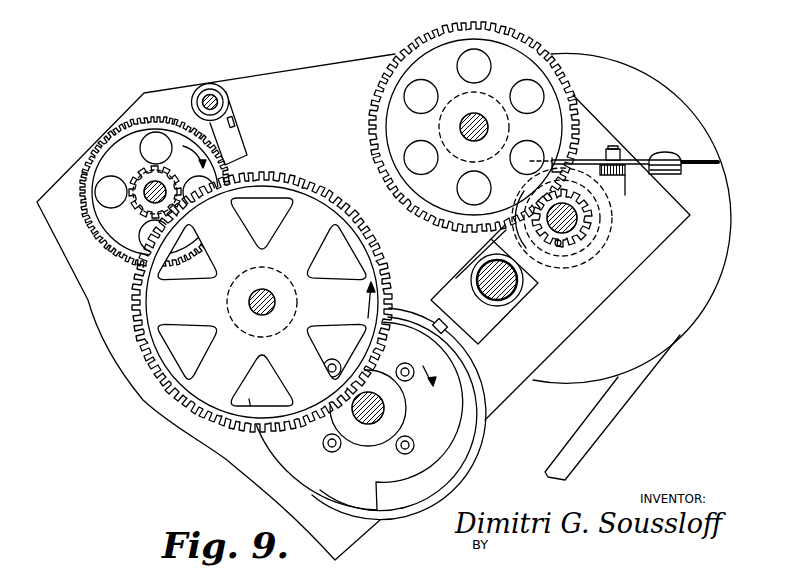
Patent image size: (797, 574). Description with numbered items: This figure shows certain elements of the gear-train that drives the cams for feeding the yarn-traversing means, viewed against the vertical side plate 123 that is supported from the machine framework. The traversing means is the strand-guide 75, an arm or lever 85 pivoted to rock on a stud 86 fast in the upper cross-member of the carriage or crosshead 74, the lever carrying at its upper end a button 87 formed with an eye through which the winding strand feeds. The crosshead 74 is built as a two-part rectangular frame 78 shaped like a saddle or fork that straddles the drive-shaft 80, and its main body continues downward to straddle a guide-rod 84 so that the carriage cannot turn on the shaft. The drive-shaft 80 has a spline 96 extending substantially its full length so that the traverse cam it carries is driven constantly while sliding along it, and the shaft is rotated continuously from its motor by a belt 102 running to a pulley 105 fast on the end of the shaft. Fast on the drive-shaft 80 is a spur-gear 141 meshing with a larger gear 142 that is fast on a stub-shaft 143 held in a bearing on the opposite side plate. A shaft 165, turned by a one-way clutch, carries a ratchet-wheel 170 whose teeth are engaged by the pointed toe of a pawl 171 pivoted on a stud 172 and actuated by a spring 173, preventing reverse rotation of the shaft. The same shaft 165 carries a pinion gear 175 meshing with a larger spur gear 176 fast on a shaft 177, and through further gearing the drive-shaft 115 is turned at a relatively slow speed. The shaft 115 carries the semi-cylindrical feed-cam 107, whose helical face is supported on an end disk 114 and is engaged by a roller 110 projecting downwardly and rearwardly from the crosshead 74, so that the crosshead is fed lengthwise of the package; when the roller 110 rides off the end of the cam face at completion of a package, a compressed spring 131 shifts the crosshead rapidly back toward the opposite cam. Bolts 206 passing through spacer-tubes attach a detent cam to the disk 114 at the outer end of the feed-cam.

The carriage or crosshead 74 is at (625, 195).
The strand-guide 75 is at (683, 156).
The two-part rectangular frame 78 is at (594, 236).
The drive-shaft 80 is at (568, 223).
The guide-rod 84 is at (510, 293).
The arm or lever 85 is at (592, 160).
The stud 86 is at (618, 150).
The button 87 is at (668, 151).
The spline 96 is at (578, 219).
The belt 102 is at (604, 412).
The pulley 105 is at (710, 222).
The semi-cylindrical cam 107 is at (472, 447).
The bowl or roller 110 is at (437, 318).
The end disk 114 is at (457, 388).
The drive-shaft 115 is at (378, 410).
The vertical side plate 123 is at (237, 452).
The spring 131 is at (524, 284).
The spur-gear 141 is at (558, 246).
The gear 142 is at (541, 48).
The stub-shaft 143 is at (460, 127).
The shaft 165 is at (150, 185).
The ratchet-wheel 170 is at (184, 118).
The pawl 171 is at (244, 153).
The stud 172 is at (216, 101).
The spring 173 is at (234, 117).
The pinion gear 175 is at (147, 214).
The spur gear 176 is at (153, 288).
The shaft 177 is at (250, 302).
The bolts 206 is at (402, 452).